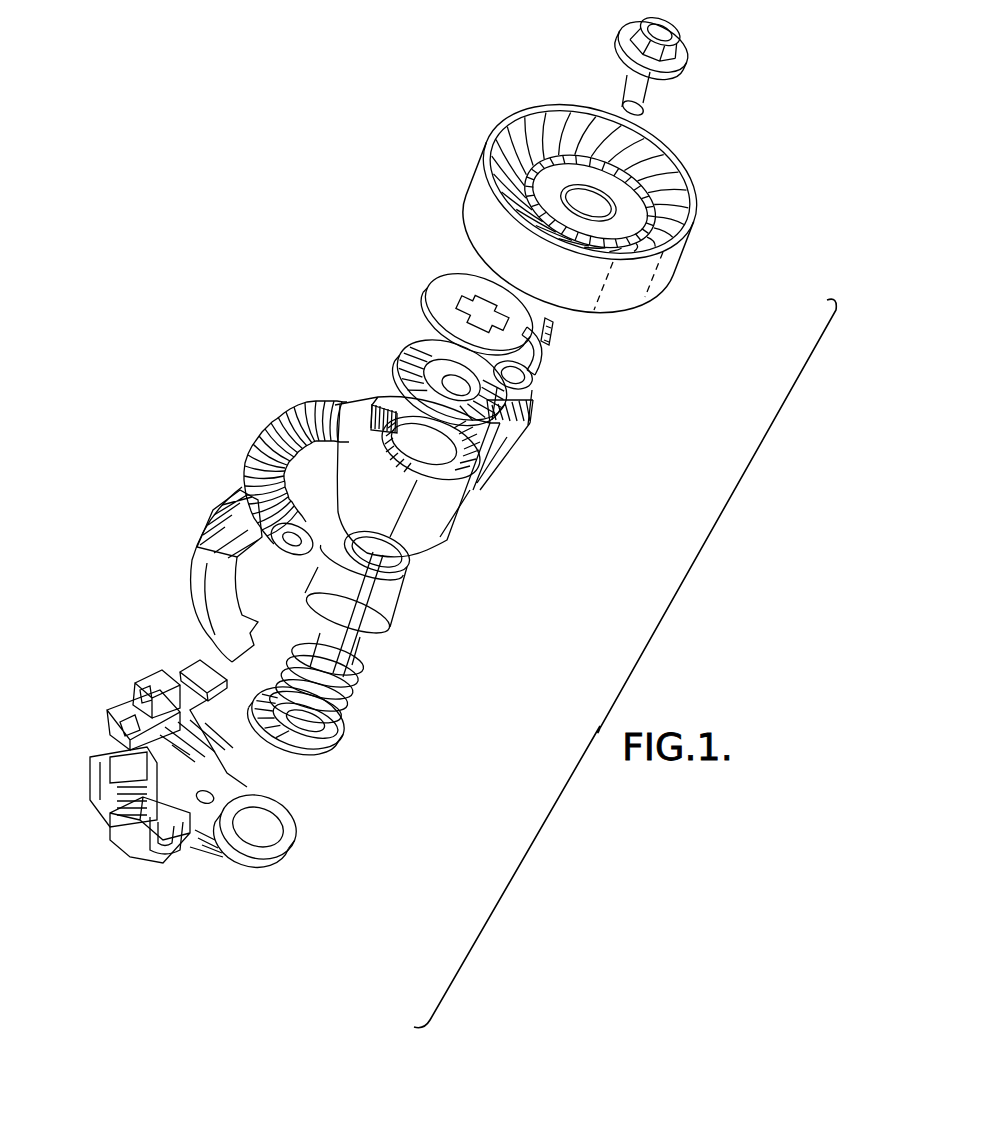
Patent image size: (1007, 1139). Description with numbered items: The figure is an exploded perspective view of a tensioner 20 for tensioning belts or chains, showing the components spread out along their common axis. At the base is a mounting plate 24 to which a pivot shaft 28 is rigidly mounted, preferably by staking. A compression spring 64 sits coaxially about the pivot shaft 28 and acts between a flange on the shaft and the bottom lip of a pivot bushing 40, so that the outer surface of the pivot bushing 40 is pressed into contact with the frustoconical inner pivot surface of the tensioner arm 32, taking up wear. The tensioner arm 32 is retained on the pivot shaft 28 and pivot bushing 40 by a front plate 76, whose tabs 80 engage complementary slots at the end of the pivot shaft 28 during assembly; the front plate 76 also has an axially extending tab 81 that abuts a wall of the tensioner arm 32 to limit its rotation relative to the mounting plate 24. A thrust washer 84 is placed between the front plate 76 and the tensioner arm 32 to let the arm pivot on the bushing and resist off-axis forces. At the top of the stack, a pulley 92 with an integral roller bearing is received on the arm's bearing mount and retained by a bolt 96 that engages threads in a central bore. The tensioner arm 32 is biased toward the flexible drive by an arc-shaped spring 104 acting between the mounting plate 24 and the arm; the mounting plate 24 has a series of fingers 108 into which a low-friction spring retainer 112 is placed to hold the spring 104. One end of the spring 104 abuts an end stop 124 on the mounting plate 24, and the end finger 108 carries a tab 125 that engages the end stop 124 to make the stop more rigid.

The tensioner 20 is at (309, 326).
The mounting plate 24 is at (233, 843).
The pivot shaft 28 is at (340, 750).
The tensioner arm 32 is at (460, 510).
The pivot bushing 40 is at (387, 602).
The compression spring 64 is at (357, 700).
The front plate 76 is at (457, 282).
The tabs 80 is at (440, 288).
The axially extending tab 81 is at (552, 352).
The thrust washer 84 is at (410, 343).
The pulley 92 is at (663, 272).
The bolt 96 is at (627, 80).
The arc-shaped spring 104 is at (250, 445).
The fingers 108 is at (140, 680).
The spring retainer 112 is at (200, 578).
The end stop 124 is at (160, 863).
The tab 125 is at (187, 843).